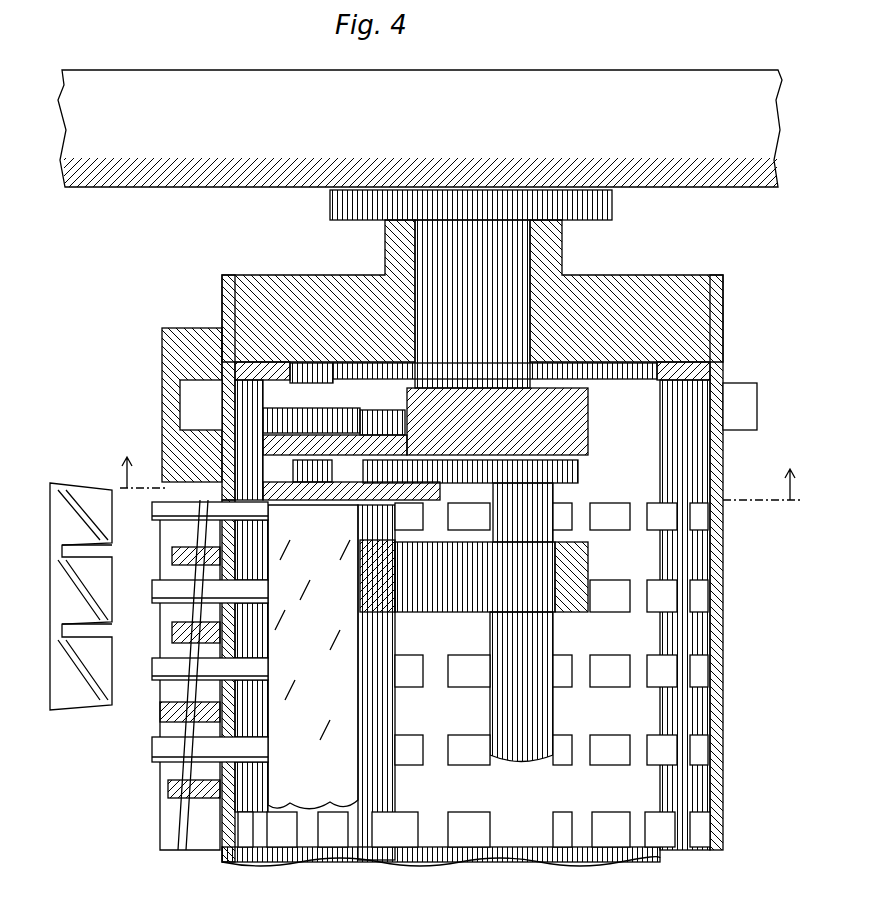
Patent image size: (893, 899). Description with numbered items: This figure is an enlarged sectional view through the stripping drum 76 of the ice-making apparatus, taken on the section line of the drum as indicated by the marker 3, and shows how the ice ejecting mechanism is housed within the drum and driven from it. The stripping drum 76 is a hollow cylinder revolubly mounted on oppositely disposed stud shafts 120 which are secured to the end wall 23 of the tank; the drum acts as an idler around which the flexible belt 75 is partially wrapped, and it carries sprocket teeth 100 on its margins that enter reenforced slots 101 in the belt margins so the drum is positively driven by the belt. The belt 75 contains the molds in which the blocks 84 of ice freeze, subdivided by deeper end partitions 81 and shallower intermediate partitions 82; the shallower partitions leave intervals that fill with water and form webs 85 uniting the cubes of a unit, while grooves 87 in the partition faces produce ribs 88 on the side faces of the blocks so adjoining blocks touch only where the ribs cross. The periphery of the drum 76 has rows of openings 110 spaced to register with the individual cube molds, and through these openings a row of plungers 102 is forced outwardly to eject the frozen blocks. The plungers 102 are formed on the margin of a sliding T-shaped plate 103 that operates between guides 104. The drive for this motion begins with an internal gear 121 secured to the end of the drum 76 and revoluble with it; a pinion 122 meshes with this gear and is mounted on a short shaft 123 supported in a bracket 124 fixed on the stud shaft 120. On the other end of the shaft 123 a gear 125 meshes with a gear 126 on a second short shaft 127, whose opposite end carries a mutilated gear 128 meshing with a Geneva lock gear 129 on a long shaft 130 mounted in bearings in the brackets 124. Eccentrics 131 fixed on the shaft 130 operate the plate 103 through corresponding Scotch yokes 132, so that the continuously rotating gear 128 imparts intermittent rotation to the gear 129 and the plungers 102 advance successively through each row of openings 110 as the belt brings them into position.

The end wall 23 is at (680, 185).
The stud shaft 120 is at (532, 236).
The internal gear 121 is at (562, 368).
The stripping drum 76 is at (716, 295).
The short shaft 123 is at (268, 380).
The pinion 122 is at (305, 365).
The bracket 124 is at (482, 398).
The gear 125 is at (275, 418).
The slot 101 is at (180, 380).
The tooth 100 is at (188, 417).
The long shaft 130 is at (588, 416).
The mutilated gear 128 is at (323, 483).
The gear 126 is at (408, 403).
The short shaft 127 is at (363, 482).
The Geneva lock gear 129 is at (578, 476).
The eccentric 131 is at (543, 555).
The Scotch yoke 132 is at (585, 563).
The guide 104 is at (357, 798).
The T-shaped plate 103 is at (320, 775).
The opening 110 is at (236, 572).
The belt 75 is at (165, 835).
The plunger 102 is at (158, 592).
The intermediate partition 82 is at (172, 555).
The end partition 81 is at (163, 704).
The groove 87 is at (175, 728).
The block 84 is at (68, 573).
The rib 88 is at (92, 612).
The web 85 is at (112, 552).
The section line 3 is at (460, 469).